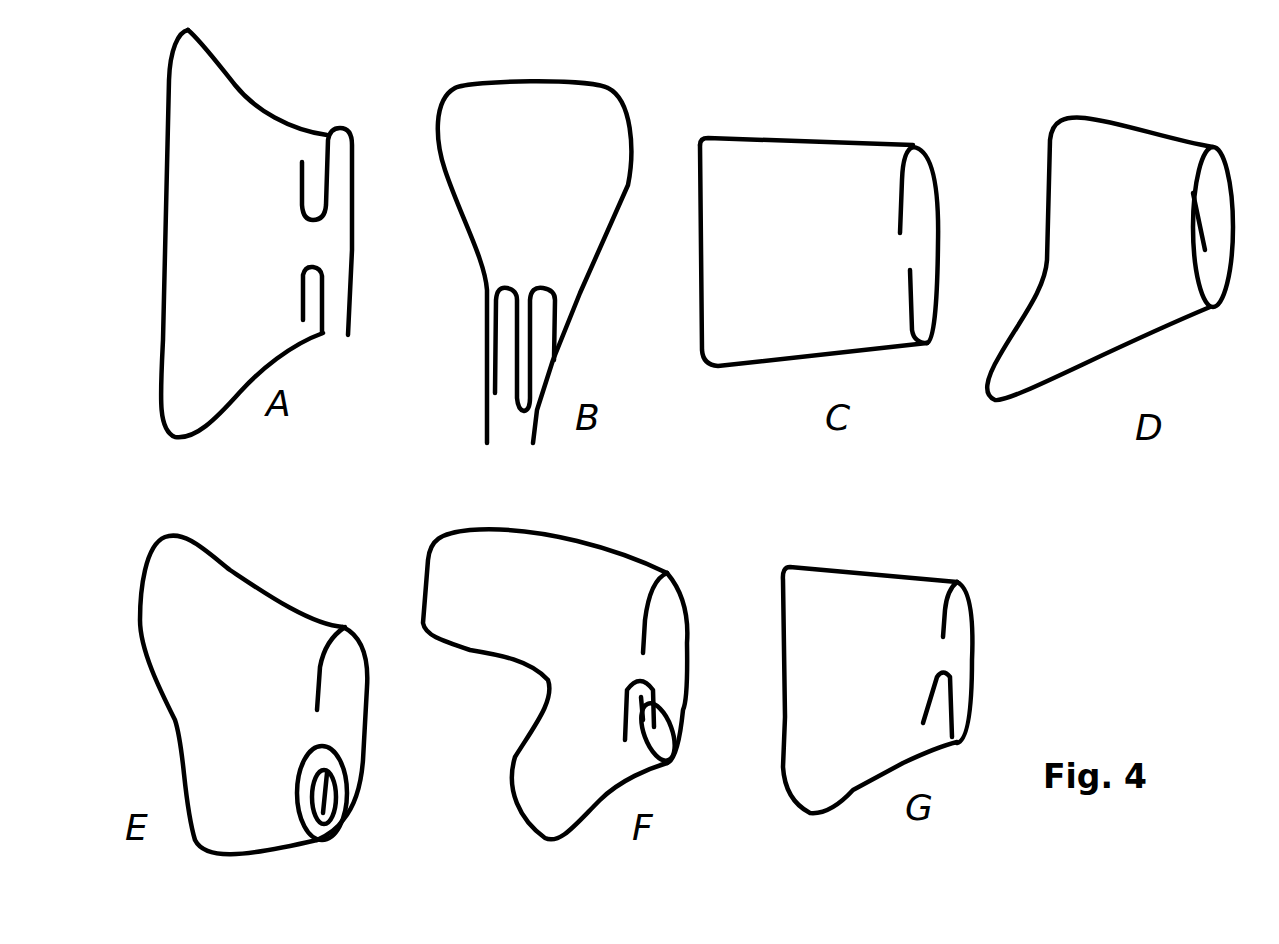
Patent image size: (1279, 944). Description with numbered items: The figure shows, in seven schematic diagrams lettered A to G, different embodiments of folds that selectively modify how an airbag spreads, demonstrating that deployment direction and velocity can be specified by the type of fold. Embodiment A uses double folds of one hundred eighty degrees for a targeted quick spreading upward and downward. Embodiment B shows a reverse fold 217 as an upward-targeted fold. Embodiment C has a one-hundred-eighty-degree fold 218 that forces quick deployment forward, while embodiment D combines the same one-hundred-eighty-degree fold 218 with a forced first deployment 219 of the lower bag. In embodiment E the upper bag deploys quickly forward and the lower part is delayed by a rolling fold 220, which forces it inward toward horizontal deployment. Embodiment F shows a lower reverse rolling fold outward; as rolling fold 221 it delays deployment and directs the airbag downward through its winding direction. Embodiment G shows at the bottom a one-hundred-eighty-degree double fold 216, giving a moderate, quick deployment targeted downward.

The 180° double fold 216 is at (300, 313).
The reverse fold 217 is at (577, 243).
The 180° fold 218 is at (897, 307).
The forced first deployment 219 is at (1153, 310).
The rolling fold 220 is at (317, 803).
The reverse rolling fold 221 is at (617, 713).